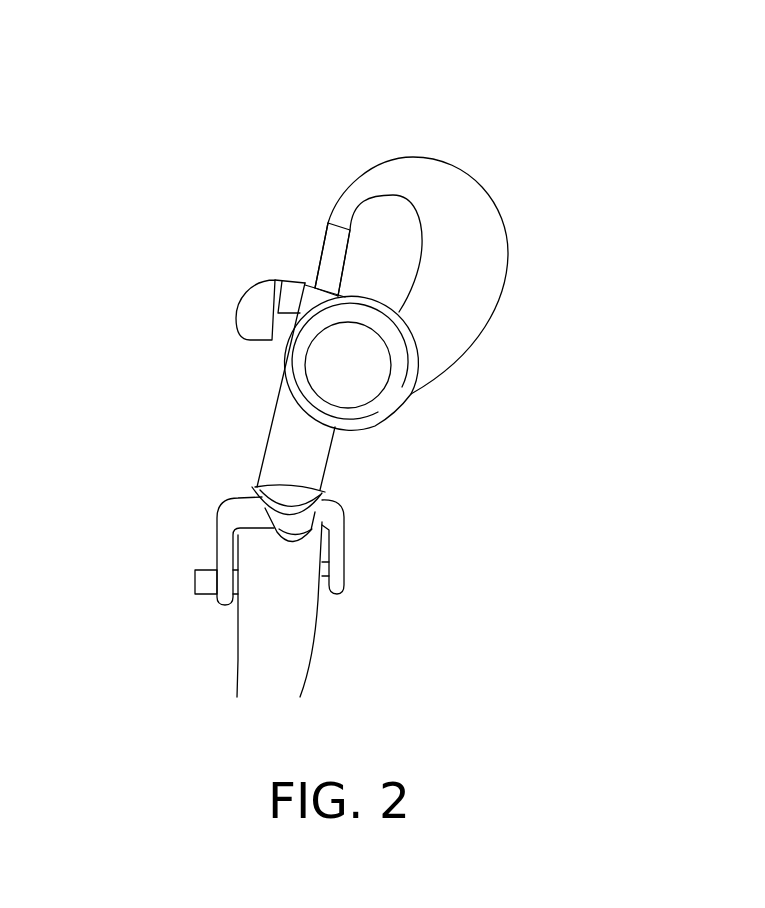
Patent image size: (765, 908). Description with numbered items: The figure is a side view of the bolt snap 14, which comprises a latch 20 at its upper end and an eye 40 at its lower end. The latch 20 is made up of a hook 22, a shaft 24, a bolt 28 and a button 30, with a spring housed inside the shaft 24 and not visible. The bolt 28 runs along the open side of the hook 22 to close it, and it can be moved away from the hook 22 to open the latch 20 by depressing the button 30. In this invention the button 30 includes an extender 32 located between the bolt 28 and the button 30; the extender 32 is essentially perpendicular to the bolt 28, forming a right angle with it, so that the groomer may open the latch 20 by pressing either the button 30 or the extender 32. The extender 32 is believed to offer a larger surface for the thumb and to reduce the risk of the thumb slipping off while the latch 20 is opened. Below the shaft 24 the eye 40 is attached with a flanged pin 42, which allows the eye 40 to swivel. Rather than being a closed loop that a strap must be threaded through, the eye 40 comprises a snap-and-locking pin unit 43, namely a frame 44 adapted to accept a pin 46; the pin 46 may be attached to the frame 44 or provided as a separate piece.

The bolt snap 14 is at (462, 230).
The latch 20 is at (492, 327).
The hook 22 is at (443, 183).
The shaft 24 is at (283, 453).
The bolt 28 is at (335, 243).
The button 30 is at (253, 318).
The extender 32 is at (287, 287).
The eye 40 is at (279, 551).
The flanged pin 42 is at (290, 543).
The snap-and-locking pin unit 43 is at (199, 530).
The frame 44 is at (337, 550).
The pin 46 is at (202, 582).